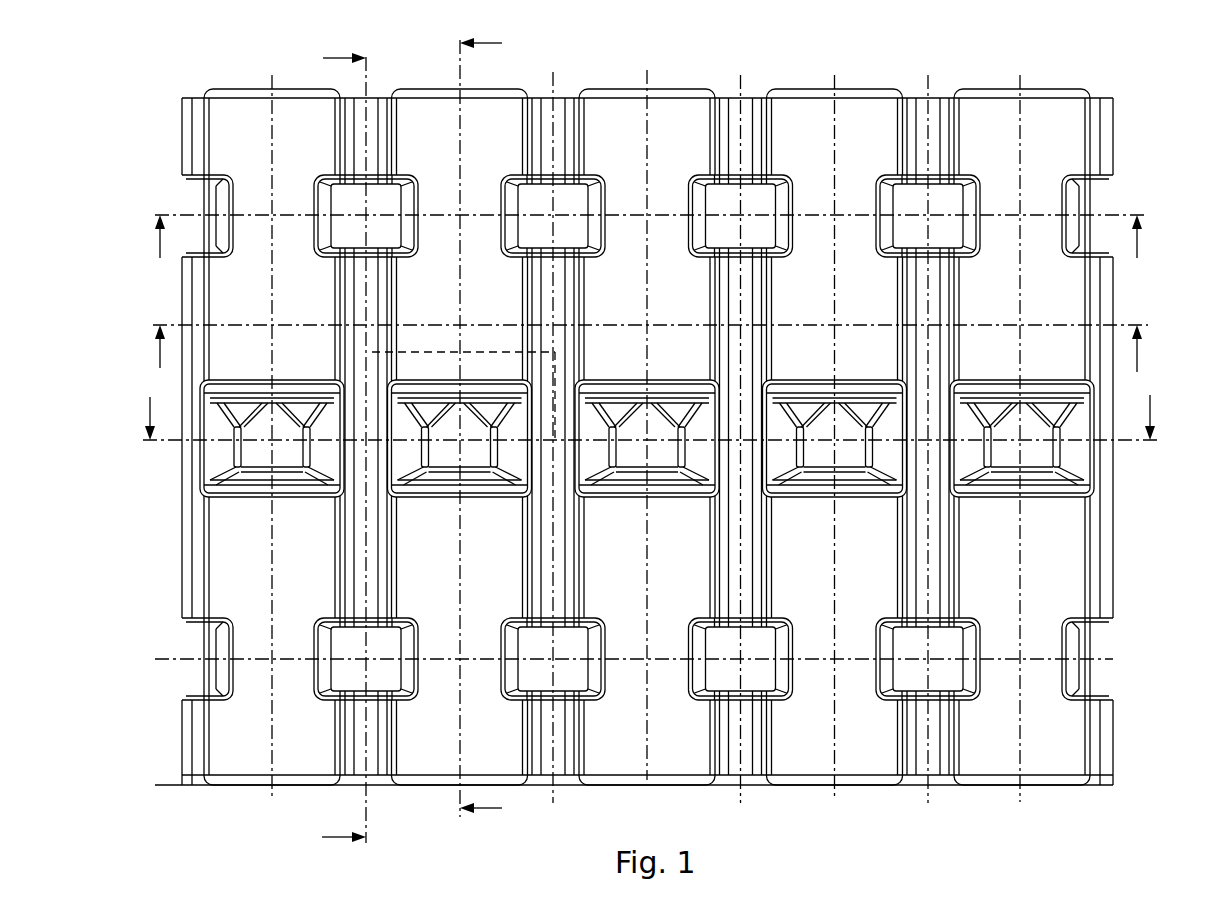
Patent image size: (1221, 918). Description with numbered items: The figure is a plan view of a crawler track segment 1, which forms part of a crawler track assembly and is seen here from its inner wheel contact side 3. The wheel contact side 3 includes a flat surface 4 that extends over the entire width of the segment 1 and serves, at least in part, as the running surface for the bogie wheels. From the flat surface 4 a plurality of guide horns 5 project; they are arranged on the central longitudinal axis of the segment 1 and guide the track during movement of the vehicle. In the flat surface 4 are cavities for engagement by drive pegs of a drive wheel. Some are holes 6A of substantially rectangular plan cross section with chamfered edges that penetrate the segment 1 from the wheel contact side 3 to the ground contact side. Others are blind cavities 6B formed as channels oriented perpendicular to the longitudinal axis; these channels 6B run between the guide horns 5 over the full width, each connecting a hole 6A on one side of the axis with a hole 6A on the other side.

The crawler track segment 1 is at (669, 441).
The inner wheel contact side 3 is at (1150, 170).
The flat surface 4 is at (415, 120).
The guide horns 5 is at (445, 443).
The holes 6A is at (903, 197).
The blind cavities (channels) 6B is at (922, 338).